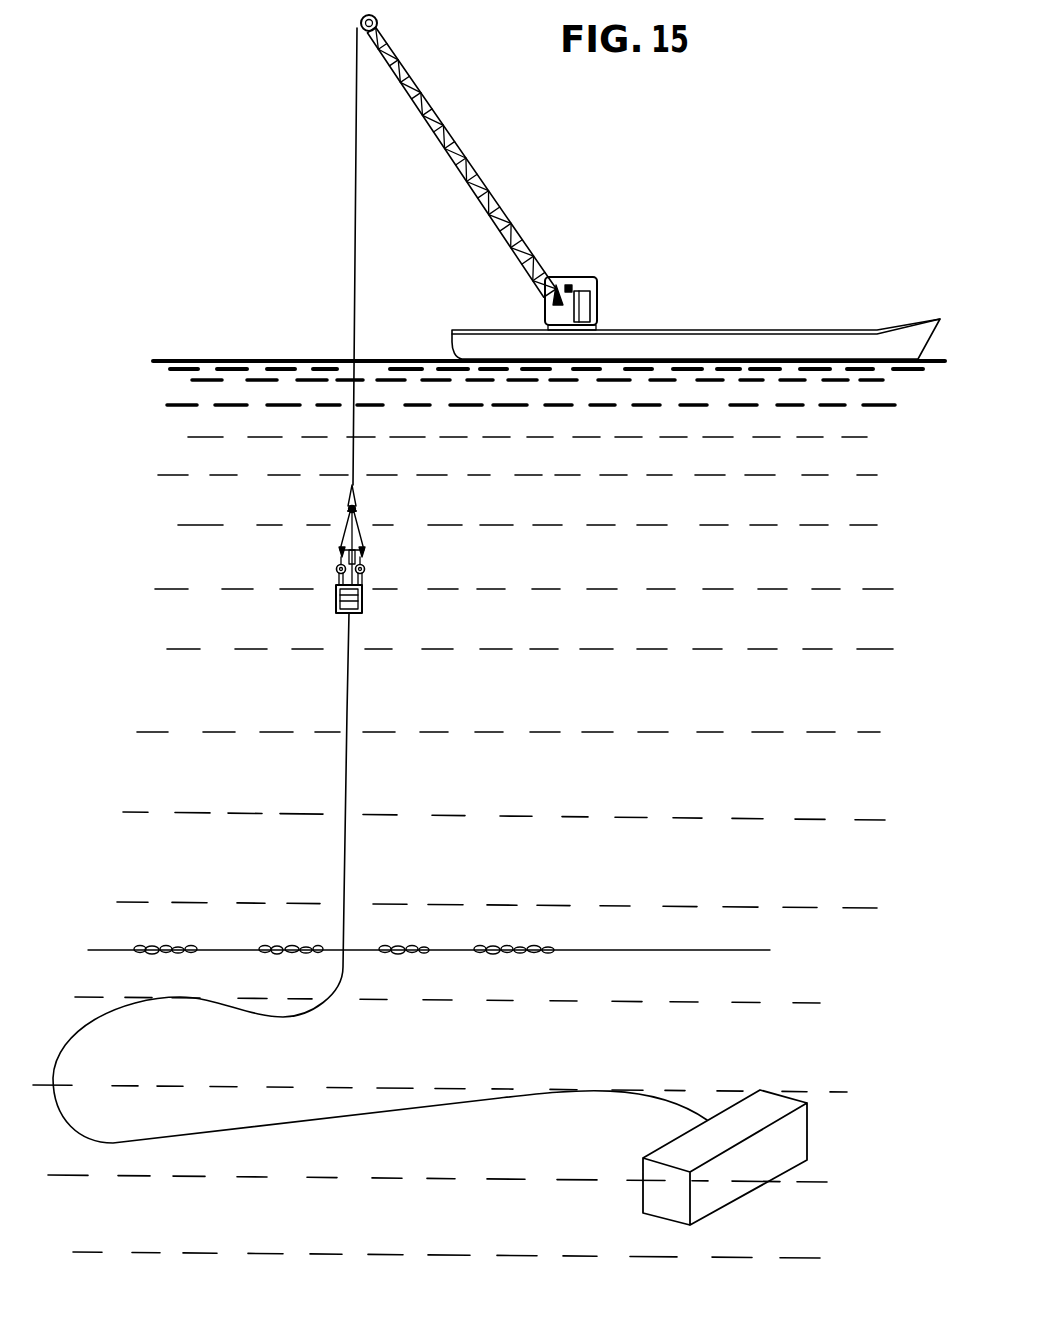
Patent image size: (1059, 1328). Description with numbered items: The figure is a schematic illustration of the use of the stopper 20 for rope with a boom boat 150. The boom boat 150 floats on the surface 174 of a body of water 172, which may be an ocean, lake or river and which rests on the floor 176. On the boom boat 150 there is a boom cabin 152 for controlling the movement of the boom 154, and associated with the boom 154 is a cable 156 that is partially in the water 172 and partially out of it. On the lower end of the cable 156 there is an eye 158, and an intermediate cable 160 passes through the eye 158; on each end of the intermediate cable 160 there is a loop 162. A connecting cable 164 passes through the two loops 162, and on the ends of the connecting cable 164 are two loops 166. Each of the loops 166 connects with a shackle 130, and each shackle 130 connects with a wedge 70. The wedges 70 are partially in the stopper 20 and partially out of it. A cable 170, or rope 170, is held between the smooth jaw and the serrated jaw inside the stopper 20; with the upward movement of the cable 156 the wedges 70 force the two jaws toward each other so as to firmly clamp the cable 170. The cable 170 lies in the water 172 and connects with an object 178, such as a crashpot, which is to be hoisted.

The boom 154 is at (460, 132).
The cable 156 is at (358, 204).
The boom cabin 152 is at (577, 280).
The boom boat 150 is at (792, 357).
The surface 174 is at (297, 358).
The body of water 172 is at (228, 467).
The eye 158 is at (357, 483).
The intermediate cable 160 is at (357, 503).
The connecting cable 164 is at (356, 530).
The loops 166 is at (363, 549).
The shackle 130 is at (364, 566).
The wedge 70 is at (364, 584).
The loop 162 is at (347, 511).
The stopper 20 is at (328, 622).
The cable 170 is at (364, 576).
The floor 176 is at (624, 950).
The object 178 is at (790, 1160).